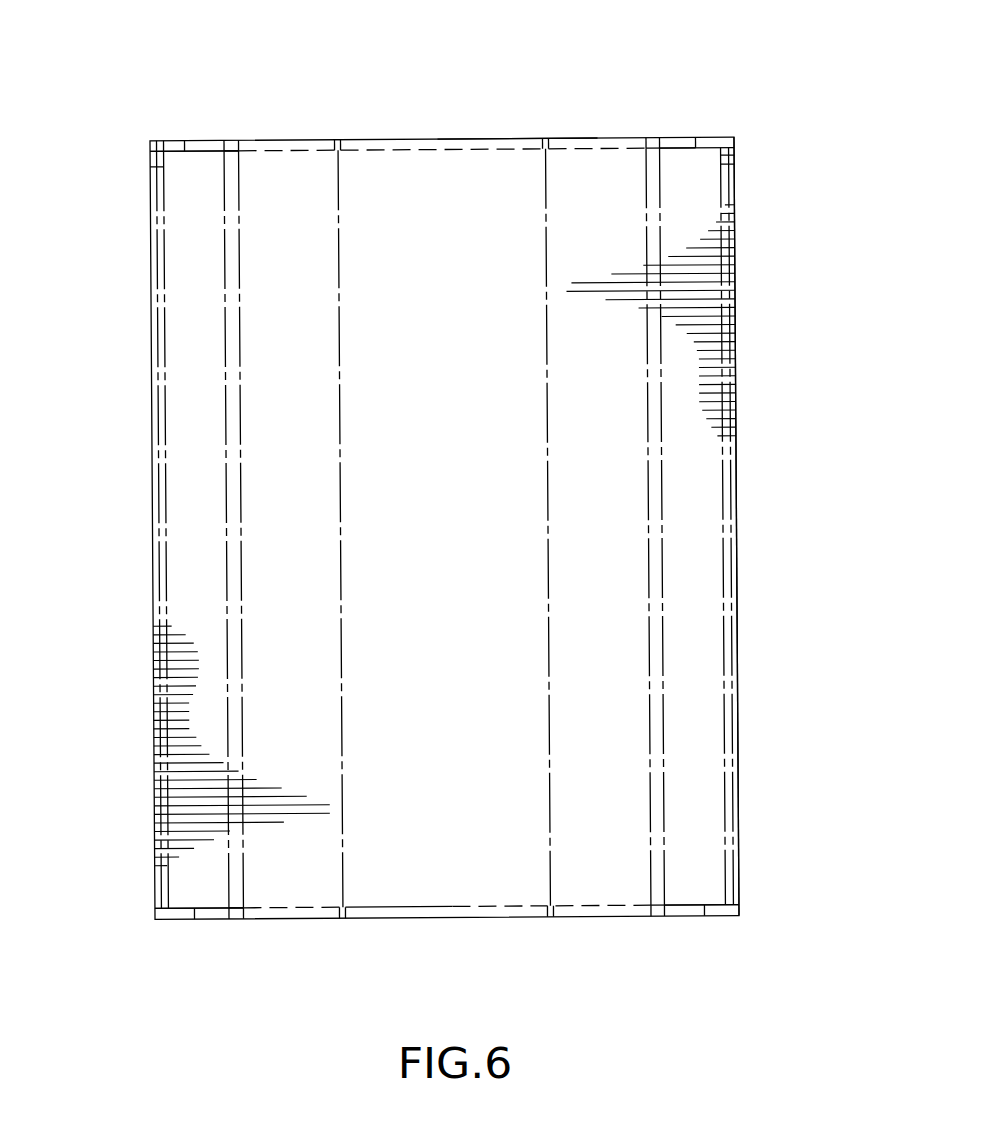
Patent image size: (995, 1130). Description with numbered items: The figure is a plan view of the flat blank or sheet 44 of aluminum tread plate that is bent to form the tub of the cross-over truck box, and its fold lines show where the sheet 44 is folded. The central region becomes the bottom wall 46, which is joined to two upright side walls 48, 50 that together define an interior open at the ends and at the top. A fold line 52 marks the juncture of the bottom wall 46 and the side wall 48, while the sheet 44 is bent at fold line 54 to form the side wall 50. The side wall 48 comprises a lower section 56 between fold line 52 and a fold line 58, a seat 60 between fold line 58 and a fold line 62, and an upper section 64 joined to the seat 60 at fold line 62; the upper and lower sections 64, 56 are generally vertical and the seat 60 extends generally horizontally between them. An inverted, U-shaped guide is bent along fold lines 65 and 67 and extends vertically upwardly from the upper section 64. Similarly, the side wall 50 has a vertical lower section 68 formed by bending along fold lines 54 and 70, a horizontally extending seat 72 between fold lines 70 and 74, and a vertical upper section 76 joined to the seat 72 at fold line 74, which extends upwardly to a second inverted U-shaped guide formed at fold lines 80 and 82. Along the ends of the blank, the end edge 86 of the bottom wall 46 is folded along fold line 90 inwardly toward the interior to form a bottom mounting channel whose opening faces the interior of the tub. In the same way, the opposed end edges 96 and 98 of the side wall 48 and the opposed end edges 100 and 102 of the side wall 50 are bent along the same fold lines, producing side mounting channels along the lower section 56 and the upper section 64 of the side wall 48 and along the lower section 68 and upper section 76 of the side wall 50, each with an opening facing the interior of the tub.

The sheet 44 is at (752, 234).
The bottom wall 46 is at (458, 152).
The side wall 48 is at (124, 496).
The side wall 50 is at (767, 487).
The fold line 52 is at (362, 152).
The fold line 54 is at (548, 802).
The lower section 56 is at (268, 152).
The fold line 58 is at (242, 562).
The seat 60 is at (237, 873).
The fold line 62 is at (225, 413).
The upper section 64 is at (182, 872).
The fold line 65 is at (158, 258).
The fold line 67 is at (166, 322).
The lower section 68 is at (595, 888).
The fold line 70 is at (647, 404).
The seat 72 is at (655, 783).
The fold line 74 is at (662, 345).
The upper section 76 is at (698, 833).
The fold line 80 is at (723, 542).
The fold line 82 is at (732, 570).
The end edge 86 is at (440, 918).
The fold line 90 is at (388, 907).
The end edge 96 is at (199, 139).
The end edge 98 is at (515, 139).
The end edge 100 is at (595, 139).
The end edge 102 is at (683, 917).